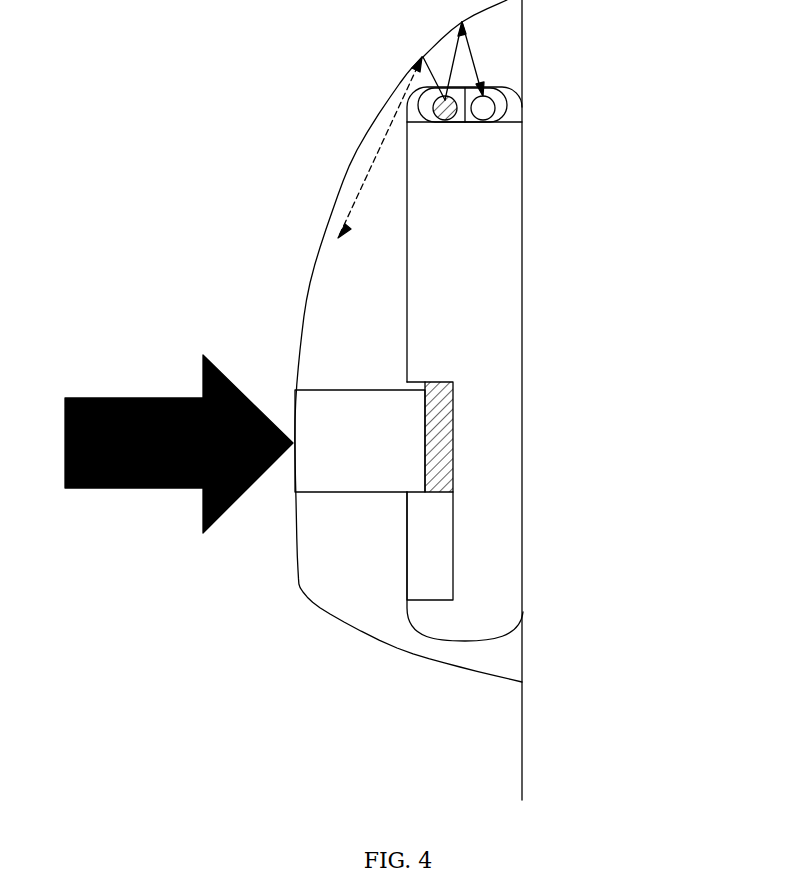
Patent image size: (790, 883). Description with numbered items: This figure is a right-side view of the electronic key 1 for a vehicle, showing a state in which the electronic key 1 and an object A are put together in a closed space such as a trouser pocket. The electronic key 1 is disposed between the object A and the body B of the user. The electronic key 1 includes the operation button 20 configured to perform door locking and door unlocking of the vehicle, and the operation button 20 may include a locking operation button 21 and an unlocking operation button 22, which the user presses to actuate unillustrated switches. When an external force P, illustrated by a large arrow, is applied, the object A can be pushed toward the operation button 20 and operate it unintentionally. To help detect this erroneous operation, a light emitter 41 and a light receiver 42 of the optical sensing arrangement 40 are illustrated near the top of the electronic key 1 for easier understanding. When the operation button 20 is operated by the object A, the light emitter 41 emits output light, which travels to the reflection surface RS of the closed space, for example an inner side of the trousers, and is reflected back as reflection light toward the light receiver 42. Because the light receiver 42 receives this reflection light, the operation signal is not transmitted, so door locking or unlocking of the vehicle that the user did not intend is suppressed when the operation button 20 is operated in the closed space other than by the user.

The electronic key 1 is at (548, 293).
The operation button 20 is at (471, 491).
The locking operation button 21 is at (453, 437).
The unlocking operation button 22 is at (497, 546).
The optical sensor 40 is at (462, 105).
The light emitter 41 is at (447, 124).
The light receiver 42 is at (487, 124).
The external force P is at (165, 398).
The object A is at (360, 493).
The body of the user B is at (523, 722).
The reflection surface RS is at (332, 212).